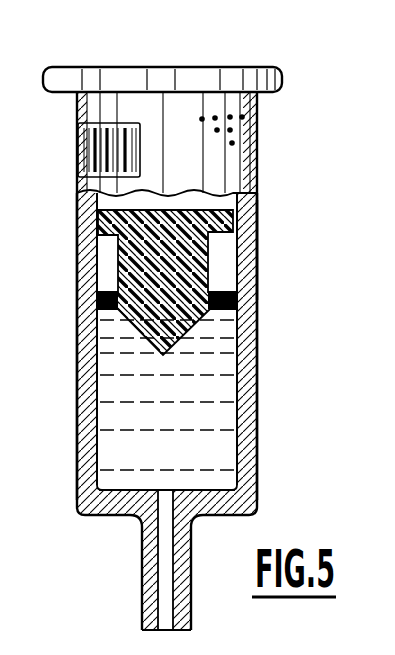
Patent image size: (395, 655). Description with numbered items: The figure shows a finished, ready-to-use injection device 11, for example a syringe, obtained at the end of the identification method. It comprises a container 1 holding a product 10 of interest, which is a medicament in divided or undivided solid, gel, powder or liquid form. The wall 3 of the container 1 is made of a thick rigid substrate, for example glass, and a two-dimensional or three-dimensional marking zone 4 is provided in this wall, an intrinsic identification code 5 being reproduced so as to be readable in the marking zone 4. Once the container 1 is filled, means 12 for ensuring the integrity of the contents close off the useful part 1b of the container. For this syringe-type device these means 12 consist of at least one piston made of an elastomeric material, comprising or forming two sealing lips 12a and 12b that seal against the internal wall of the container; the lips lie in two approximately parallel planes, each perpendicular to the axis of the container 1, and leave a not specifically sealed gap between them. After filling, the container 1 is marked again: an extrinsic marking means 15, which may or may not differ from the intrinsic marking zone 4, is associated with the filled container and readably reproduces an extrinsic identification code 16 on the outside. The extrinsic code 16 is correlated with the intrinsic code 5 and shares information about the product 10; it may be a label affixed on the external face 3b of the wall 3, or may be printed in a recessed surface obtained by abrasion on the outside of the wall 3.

The container 1 is at (266, 419).
The useful part of the container 1b is at (200, 448).
The wall 3 is at (240, 323).
The external face of the wall 3b is at (80, 293).
The marking zone 4 is at (243, 131).
The identification code 5 is at (231, 114).
The product of interest 10 is at (200, 353).
The injection device 11 is at (266, 240).
The means for ensuring the integrity of the contents 12 is at (113, 244).
The sealing lip 12a is at (103, 213).
The sealing lip 12b is at (110, 314).
The extrinsic marking means 15 is at (80, 147).
The extrinsic identification code 16 is at (110, 138).